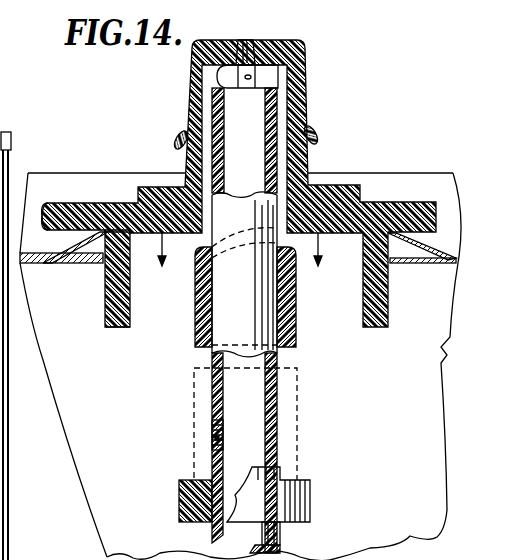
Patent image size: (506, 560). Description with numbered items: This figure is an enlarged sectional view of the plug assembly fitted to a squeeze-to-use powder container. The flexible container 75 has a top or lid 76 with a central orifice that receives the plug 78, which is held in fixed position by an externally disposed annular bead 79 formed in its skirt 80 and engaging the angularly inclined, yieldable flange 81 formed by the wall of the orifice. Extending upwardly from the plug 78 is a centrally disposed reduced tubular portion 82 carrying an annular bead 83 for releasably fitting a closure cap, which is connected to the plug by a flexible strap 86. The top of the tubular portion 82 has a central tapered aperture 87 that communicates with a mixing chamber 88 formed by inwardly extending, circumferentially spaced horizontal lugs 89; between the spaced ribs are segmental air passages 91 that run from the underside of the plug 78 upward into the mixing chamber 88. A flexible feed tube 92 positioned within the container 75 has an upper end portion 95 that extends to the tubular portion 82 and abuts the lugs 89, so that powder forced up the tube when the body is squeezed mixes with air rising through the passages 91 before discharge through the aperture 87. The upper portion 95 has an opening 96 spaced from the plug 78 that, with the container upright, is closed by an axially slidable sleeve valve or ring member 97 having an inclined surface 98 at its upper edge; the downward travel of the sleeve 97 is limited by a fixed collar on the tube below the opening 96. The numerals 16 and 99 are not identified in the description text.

The passage 16 is at (241, 261).
The container 75 is at (432, 396).
The top or lid 76 is at (5, 133).
The plug 78 is at (430, 203).
The bead 79 is at (107, 275).
The skirt 80 is at (112, 322).
The yieldable flange 81 is at (82, 260).
The tubular portion 82 is at (306, 163).
The annular bead 83 is at (311, 137).
The flexible portion or strap 86 is at (52, 205).
The tapered aperture 87 is at (248, 40).
The mixing chamber 88 is at (251, 77).
The horizontal lugs 89 is at (212, 78).
The air passages 91 is at (196, 117).
The flexible feed tube 92 is at (279, 546).
The upper end portion 95 is at (283, 351).
The opening 96 is at (212, 432).
The sleeve valve or ring member 97 is at (196, 337).
The inclined surface 98 is at (184, 290).
The collar 99 is at (300, 492).